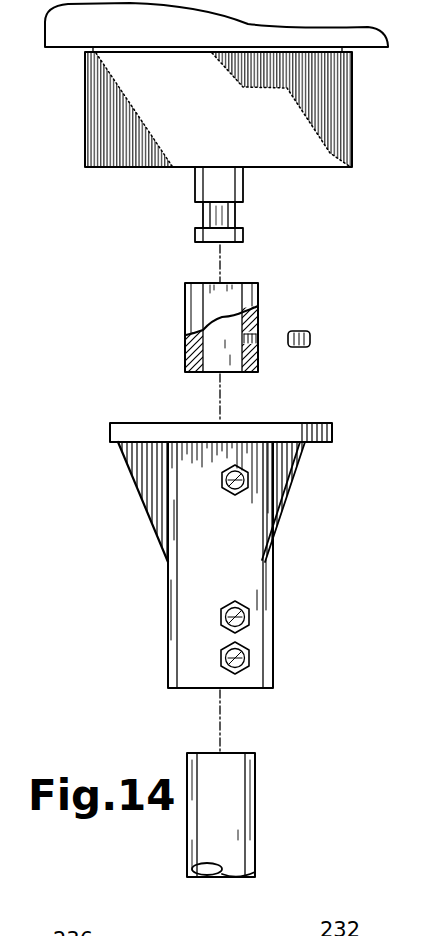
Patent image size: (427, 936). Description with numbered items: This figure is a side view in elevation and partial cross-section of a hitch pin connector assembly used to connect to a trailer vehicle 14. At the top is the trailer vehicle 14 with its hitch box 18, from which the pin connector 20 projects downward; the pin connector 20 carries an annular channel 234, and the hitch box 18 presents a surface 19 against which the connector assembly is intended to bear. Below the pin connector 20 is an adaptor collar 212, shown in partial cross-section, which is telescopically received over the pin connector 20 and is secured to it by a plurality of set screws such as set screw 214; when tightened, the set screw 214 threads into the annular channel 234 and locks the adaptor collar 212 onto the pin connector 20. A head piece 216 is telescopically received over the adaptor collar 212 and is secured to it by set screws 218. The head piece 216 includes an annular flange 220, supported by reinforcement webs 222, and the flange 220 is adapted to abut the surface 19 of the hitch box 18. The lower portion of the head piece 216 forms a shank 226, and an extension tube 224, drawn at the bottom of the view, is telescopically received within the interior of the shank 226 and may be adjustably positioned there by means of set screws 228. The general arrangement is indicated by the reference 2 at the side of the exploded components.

The seat assembly 2 is at (342, 365).
The trailer vehicle 14 is at (118, 33).
The hitch box 18 is at (212, 132).
The surface 19 is at (140, 168).
The pin connector 20 is at (247, 215).
The adaptor collar 212 is at (185, 318).
The set screw 214 is at (307, 330).
The head piece 216 is at (230, 565).
The set screws 218 is at (245, 488).
The annular flange 220 is at (307, 447).
The reinforcement webs 222 is at (150, 483).
The extension tube 224 is at (238, 805).
The shank 226 is at (188, 600).
The set screws 228 is at (252, 658).
The annular channel 234 is at (193, 214).